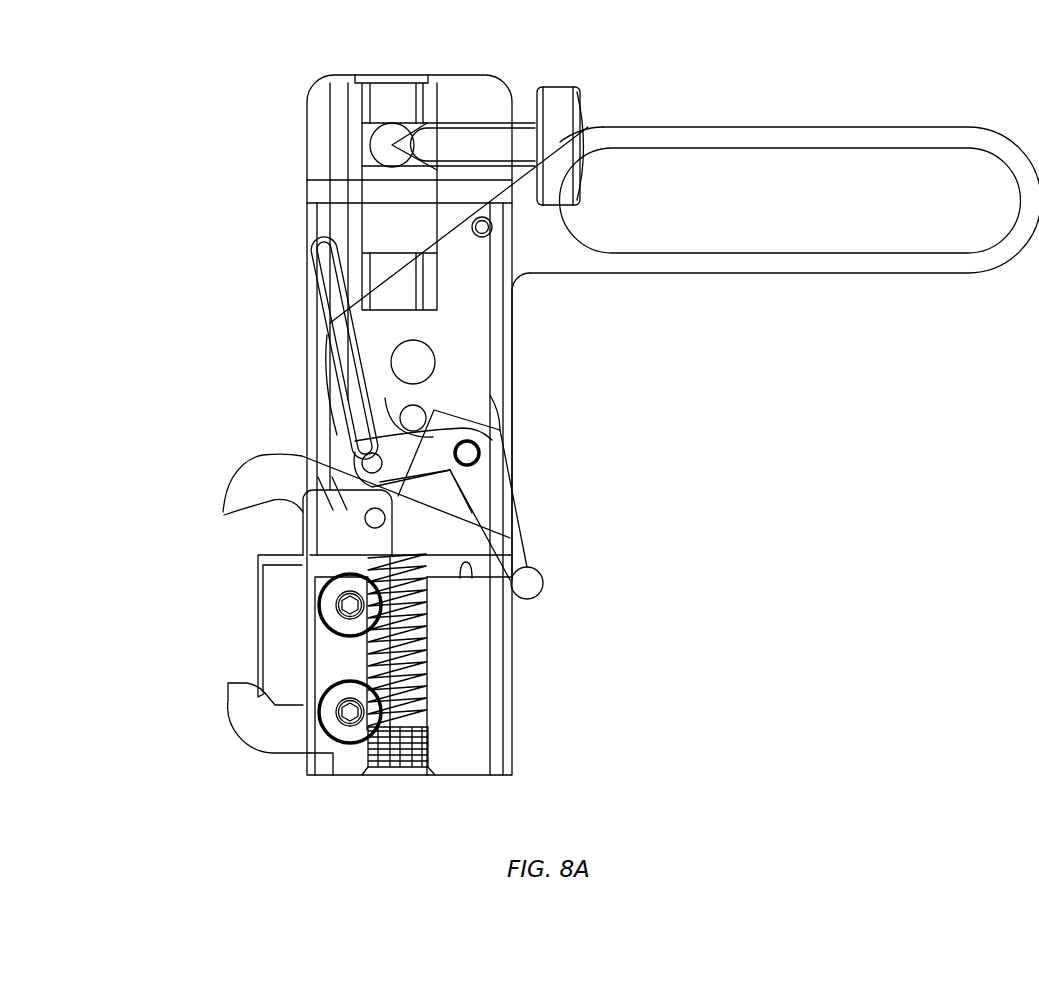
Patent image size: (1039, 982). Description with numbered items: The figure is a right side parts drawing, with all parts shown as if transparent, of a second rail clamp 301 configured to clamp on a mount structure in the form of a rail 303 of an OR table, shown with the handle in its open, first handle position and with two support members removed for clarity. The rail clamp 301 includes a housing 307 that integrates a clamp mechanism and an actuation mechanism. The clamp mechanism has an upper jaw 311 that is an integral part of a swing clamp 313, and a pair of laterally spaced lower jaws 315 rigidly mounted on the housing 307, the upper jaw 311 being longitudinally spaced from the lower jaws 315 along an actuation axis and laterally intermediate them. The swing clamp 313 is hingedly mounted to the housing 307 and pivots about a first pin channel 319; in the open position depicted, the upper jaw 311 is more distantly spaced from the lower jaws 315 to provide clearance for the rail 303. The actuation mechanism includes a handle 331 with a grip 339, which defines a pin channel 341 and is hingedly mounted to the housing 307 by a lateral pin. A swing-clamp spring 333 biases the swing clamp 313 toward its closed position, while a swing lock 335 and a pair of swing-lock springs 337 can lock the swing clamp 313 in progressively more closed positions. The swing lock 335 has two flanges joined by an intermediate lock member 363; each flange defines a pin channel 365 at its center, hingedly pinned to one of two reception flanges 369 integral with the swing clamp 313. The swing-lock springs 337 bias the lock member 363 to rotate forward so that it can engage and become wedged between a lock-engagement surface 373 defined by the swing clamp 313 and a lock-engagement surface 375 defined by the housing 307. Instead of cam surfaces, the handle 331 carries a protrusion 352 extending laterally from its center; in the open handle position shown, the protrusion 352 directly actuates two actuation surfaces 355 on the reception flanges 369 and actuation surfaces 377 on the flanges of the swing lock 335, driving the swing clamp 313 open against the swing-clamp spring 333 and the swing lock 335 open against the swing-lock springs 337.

The rail clamp 301 is at (462, 75).
The rail 303 is at (268, 605).
The housing 307 is at (512, 745).
The upper jaw 311 is at (238, 480).
The swing clamp 313 is at (415, 541).
The lower jaws 315 is at (260, 738).
The first pin channel 319 is at (365, 519).
The handle 331 is at (558, 262).
The swing-clamp spring 333 is at (418, 685).
The swing lock 335 is at (527, 550).
The swing-lock springs 337 is at (333, 273).
The grip 339 is at (798, 135).
The pin channel 341 is at (420, 362).
The protrusion 352 is at (416, 407).
The actuation surfaces 355 is at (352, 440).
The lock member 363 is at (543, 588).
The pin channel 365 is at (480, 455).
The reception flanges 369 is at (490, 432).
The lock-engagement surface 373 is at (433, 580).
The lock-engagement surface 375 is at (465, 582).
The actuation surfaces 377 is at (400, 428).